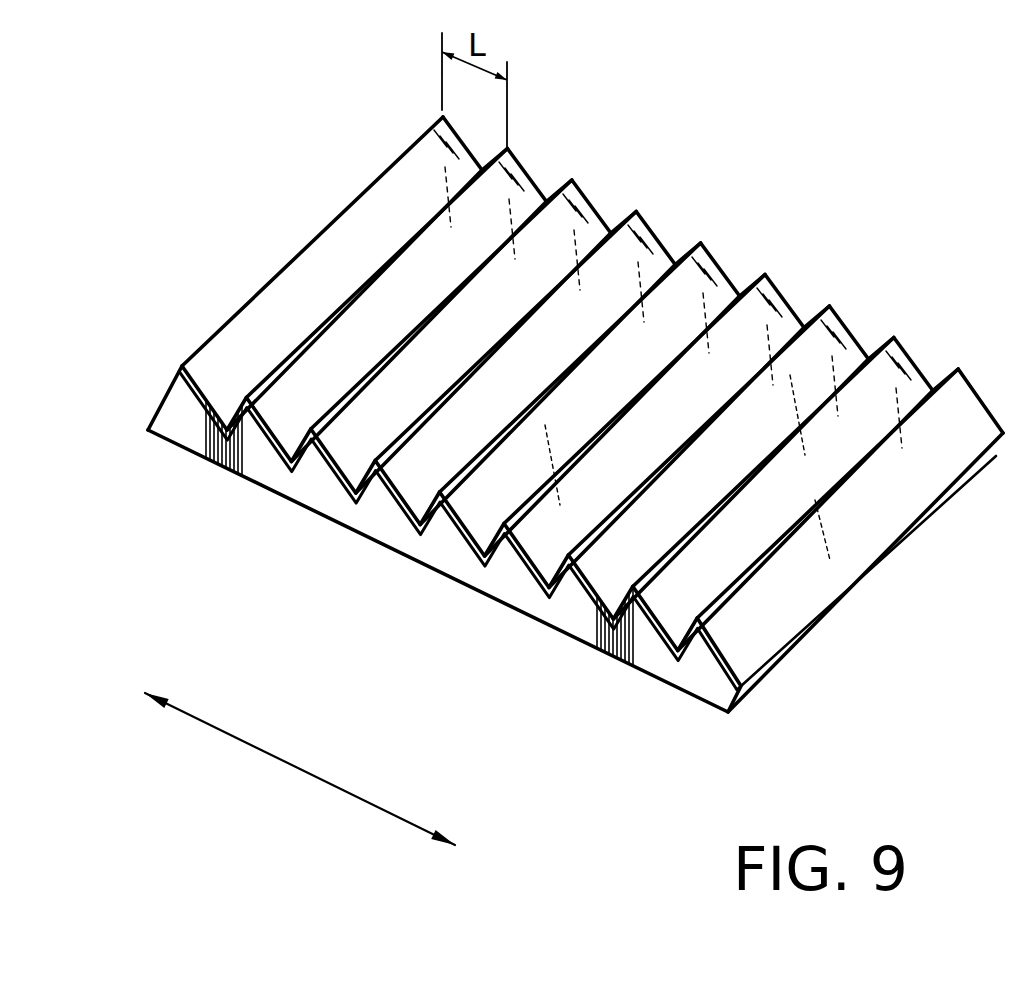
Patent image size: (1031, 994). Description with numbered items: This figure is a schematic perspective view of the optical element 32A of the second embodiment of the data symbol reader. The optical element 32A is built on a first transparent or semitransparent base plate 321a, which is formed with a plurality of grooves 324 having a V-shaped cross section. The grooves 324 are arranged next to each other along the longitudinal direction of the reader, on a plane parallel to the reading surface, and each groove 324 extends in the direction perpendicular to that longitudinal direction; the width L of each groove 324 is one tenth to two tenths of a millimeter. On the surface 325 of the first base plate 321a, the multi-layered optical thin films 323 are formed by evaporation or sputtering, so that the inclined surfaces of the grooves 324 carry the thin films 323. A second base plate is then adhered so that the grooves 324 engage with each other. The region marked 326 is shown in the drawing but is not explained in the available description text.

The optical element 32A is at (527, 412).
The multi-layered optical thin films 323 is at (324, 266).
The grooves 324 is at (227, 413).
The surface of the first base plate 325 is at (196, 402).
The layer on prism surface 326 is at (234, 470).
The first base plate 321a is at (571, 618).